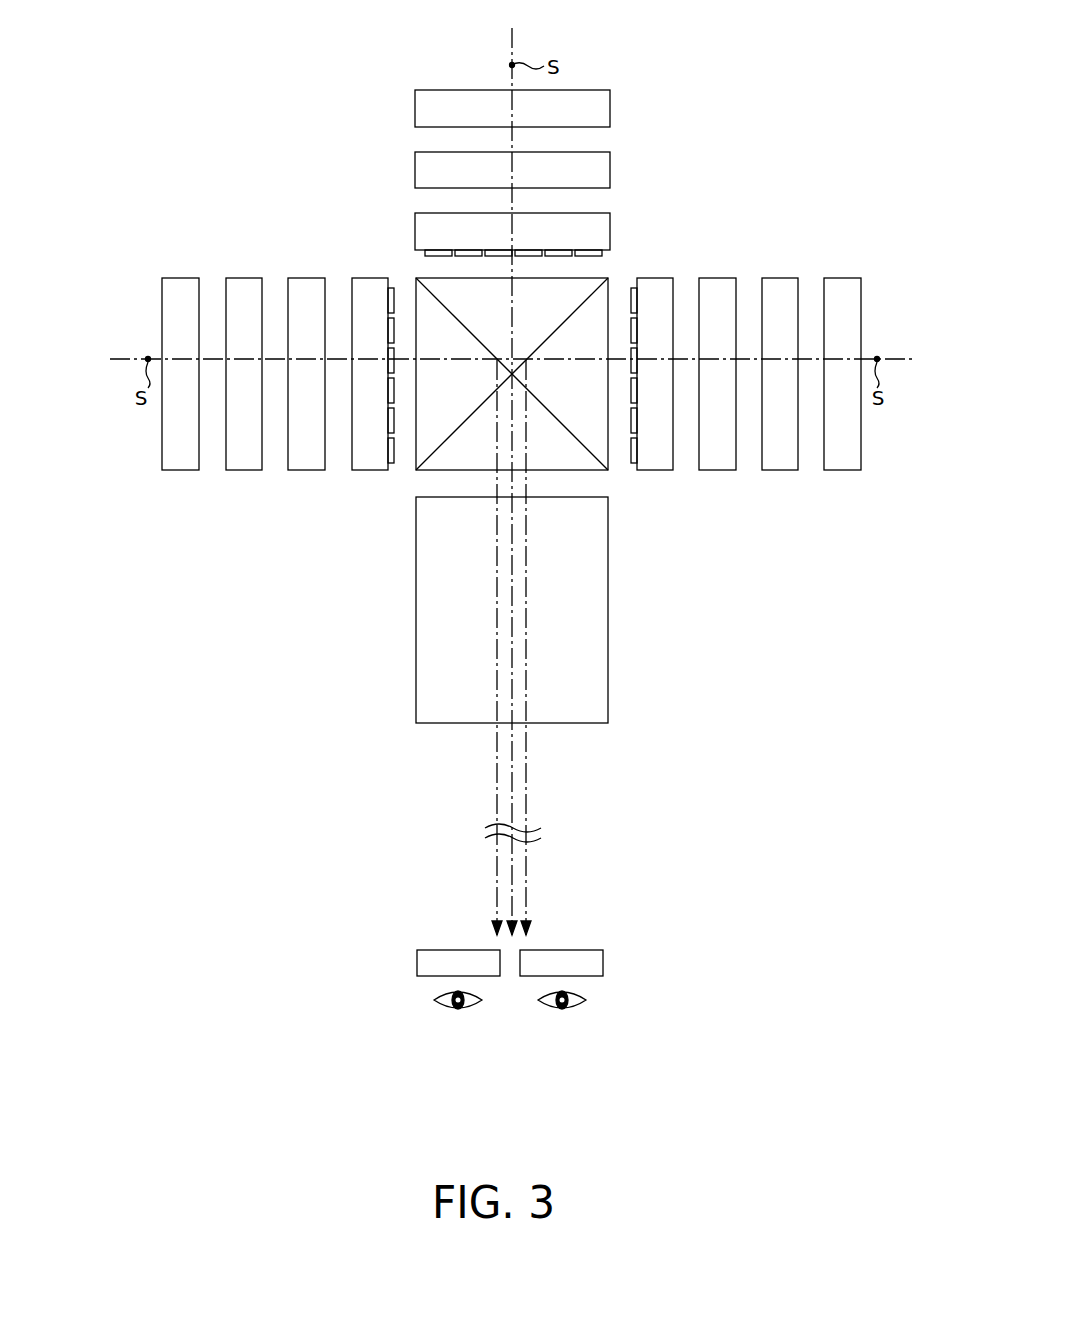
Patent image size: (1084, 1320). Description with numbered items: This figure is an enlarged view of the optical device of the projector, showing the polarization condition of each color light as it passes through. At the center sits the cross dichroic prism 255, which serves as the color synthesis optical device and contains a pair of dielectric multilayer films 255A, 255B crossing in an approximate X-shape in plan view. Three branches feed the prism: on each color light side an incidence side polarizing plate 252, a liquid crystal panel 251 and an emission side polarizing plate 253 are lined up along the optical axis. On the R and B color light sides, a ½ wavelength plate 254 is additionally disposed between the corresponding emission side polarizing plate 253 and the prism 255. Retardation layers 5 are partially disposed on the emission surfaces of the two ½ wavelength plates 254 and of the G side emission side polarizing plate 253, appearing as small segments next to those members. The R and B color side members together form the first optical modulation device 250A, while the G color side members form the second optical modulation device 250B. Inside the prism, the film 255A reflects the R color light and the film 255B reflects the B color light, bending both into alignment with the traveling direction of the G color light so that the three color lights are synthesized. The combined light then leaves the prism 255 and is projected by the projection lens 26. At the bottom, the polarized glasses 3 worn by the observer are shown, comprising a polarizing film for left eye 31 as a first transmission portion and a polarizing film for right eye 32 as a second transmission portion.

The incidence side polarizing plate 252 is at (610, 100).
The liquid crystal panel 251 is at (610, 165).
The emission side polarizing plate 253 is at (610, 228).
The ½ wavelength plate 254 is at (370, 470).
The retardation layer 5 is at (636, 497).
The first optical modulation device 250A is at (635, 206).
The second optical modulation device 250B is at (763, 87).
The cross dichroic prism 255 is at (576, 462).
The dielectric multilayer film 255A is at (549, 333).
The dielectric multilayer film 255B is at (471, 333).
The projection lens 26 is at (608, 600).
The polarizing film for left eye 31 is at (497, 957).
The polarizing film for right eye 32 is at (580, 963).
The polarized glasses 3 is at (689, 867).